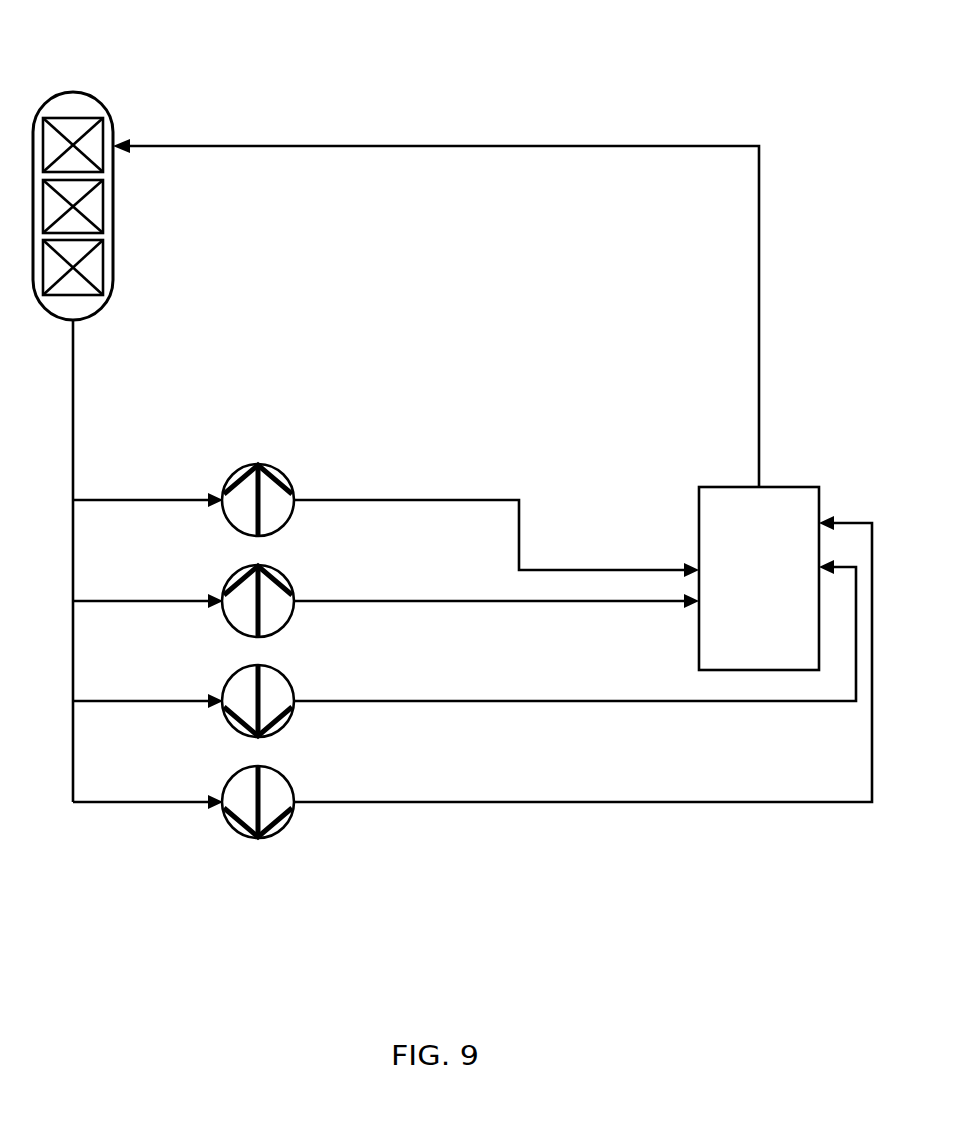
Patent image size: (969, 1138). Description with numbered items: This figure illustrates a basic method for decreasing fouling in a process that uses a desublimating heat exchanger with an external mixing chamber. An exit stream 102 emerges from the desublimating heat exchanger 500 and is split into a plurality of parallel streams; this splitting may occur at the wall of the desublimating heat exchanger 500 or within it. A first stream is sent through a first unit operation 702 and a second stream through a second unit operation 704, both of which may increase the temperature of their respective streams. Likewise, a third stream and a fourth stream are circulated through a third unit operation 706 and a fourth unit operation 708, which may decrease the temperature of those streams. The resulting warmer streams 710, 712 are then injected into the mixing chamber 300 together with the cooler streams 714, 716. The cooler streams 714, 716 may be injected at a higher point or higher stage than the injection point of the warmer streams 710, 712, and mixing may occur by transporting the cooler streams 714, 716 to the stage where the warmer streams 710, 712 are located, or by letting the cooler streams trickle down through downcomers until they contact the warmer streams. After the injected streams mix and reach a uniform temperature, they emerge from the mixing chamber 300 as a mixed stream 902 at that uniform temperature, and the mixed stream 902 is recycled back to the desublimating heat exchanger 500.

The desublimating heat exchanger 500 is at (77, 92).
The mixed stream 902 is at (365, 145).
The exit stream 102 is at (77, 409).
The first unit operation 702 is at (262, 464).
The second unit operation 704 is at (228, 578).
The third unit operation 706 is at (228, 678).
The fourth unit operation 708 is at (228, 780).
The warmer stream 710 is at (496, 519).
The warmer stream 712 is at (496, 586).
The cooler stream 714 is at (575, 630).
The cooler stream 716 is at (583, 659).
The mixing chamber 300 is at (759, 578).